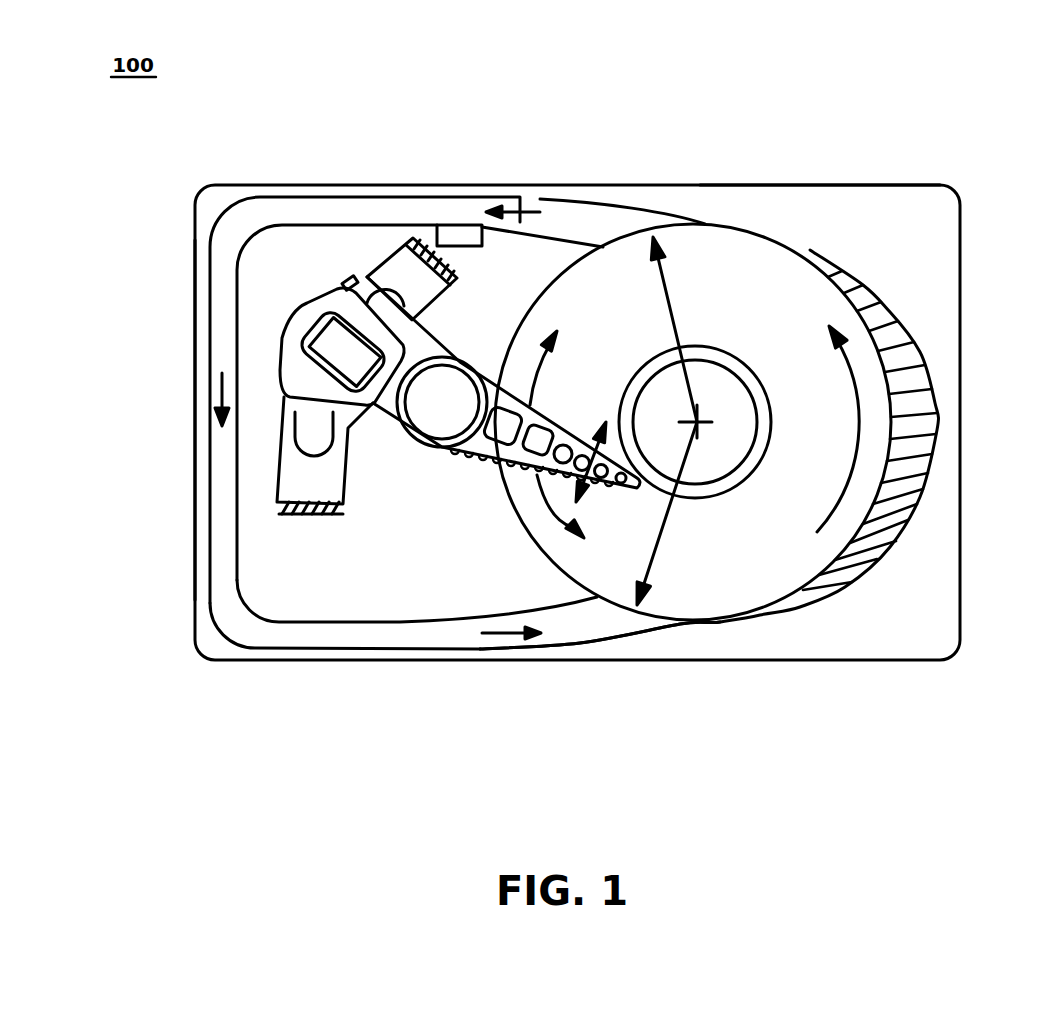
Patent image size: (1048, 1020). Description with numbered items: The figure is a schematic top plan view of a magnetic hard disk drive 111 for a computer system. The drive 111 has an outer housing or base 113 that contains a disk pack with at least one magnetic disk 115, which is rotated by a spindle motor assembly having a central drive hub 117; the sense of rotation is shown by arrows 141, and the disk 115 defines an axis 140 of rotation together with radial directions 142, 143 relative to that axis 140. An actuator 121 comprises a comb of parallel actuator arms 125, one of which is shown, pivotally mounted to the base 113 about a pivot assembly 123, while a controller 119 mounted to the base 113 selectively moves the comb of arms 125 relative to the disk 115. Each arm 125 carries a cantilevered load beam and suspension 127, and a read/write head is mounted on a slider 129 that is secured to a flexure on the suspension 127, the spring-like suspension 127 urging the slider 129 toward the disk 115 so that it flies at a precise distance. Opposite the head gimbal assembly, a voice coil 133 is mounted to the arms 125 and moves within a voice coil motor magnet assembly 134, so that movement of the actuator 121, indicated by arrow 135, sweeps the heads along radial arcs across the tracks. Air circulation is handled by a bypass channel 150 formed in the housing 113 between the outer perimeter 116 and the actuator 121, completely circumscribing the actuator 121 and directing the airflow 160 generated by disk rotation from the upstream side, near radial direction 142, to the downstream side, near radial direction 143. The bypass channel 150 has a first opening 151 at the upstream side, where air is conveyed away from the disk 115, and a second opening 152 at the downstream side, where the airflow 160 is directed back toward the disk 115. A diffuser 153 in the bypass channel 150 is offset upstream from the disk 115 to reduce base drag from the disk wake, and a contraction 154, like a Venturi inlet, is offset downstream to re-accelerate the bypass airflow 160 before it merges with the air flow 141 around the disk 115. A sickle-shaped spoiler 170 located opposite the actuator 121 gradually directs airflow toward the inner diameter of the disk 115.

The hard disk drive 111 is at (960, 513).
The base 113 is at (768, 190).
The magnetic disk 115 is at (782, 262).
The outer perimeter 116 is at (195, 290).
The central drive hub 117 is at (727, 353).
The controller 119 is at (482, 247).
The actuator 121 is at (362, 530).
The pivot assembly 123 is at (402, 447).
The actuator arm 125 is at (495, 377).
The suspension 127 is at (542, 413).
The slider 129 is at (608, 482).
The voice coil 133 is at (307, 305).
The voice coil motor magnet assembly 134 is at (398, 268).
The arrow indicating actuator movement 135 is at (570, 492).
The axis of rotation 140 is at (699, 426).
The arrows of disk rotation 141 is at (850, 380).
The radial direction 142 is at (673, 303).
The radial direction 143 is at (653, 552).
The bypass channel 150 is at (467, 213).
The first opening 151 is at (603, 247).
The second opening 152 is at (627, 607).
The diffuser 153 is at (603, 200).
The contraction 154 is at (580, 630).
The airflow 160 is at (220, 375).
The sickle-shaped spoiler 170 is at (857, 543).